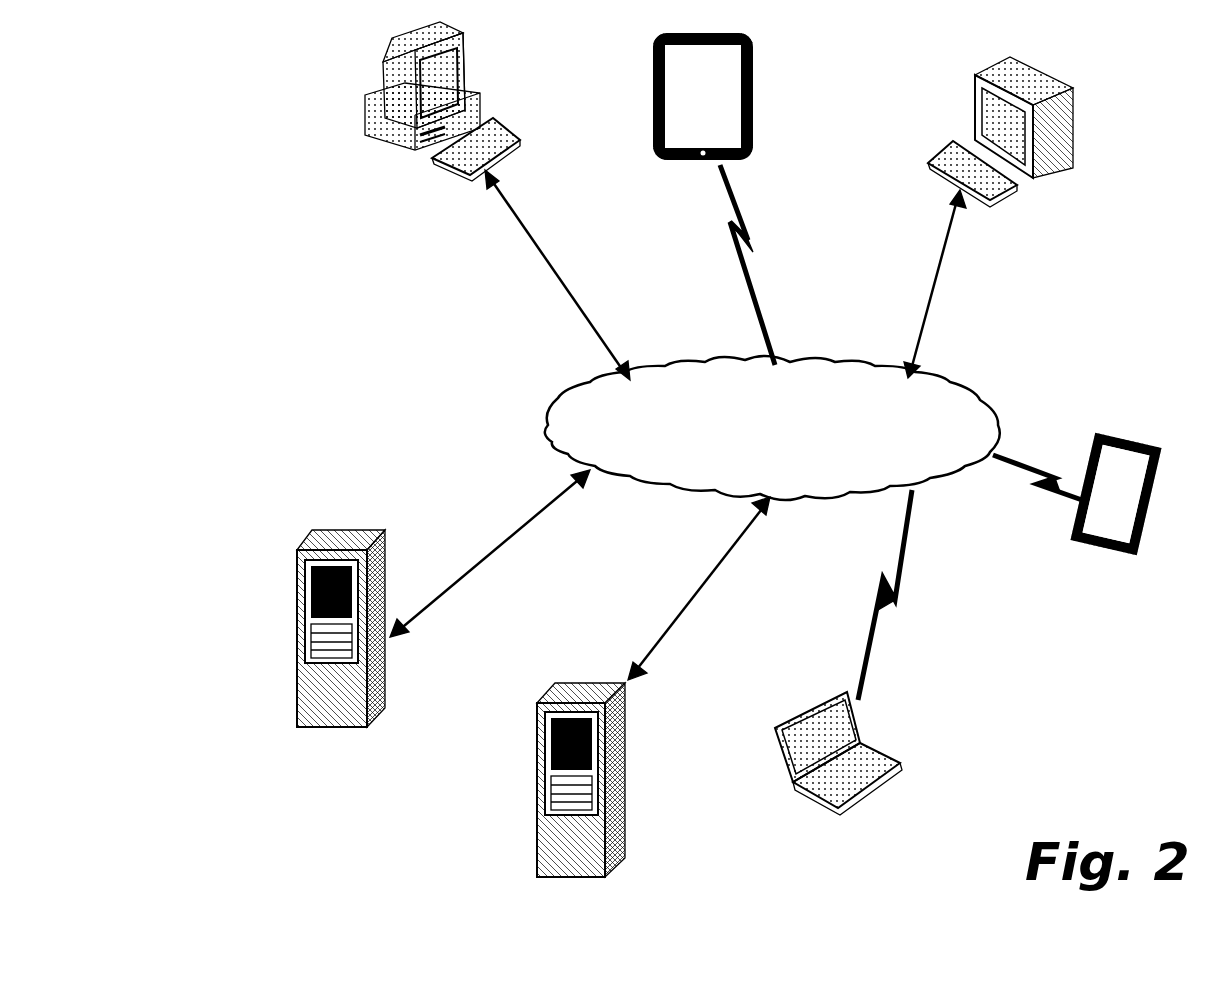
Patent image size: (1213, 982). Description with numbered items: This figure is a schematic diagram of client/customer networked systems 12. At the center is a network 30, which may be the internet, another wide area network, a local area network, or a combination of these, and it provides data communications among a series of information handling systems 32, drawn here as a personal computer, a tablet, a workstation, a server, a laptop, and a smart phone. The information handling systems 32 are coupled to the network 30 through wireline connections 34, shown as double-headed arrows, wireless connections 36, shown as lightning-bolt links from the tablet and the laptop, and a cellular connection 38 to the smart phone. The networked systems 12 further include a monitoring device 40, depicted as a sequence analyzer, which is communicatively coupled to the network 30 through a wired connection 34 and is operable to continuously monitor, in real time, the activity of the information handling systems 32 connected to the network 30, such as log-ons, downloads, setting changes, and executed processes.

The client/customer networked systems 12 is at (250, 402).
The network 30 is at (822, 362).
The information handling systems 32 is at (455, 46).
The wireline connections 34 is at (560, 250).
The wireless connections 36 is at (756, 288).
The cellular connections 38 is at (1035, 458).
The monitoring devices 40 is at (626, 822).